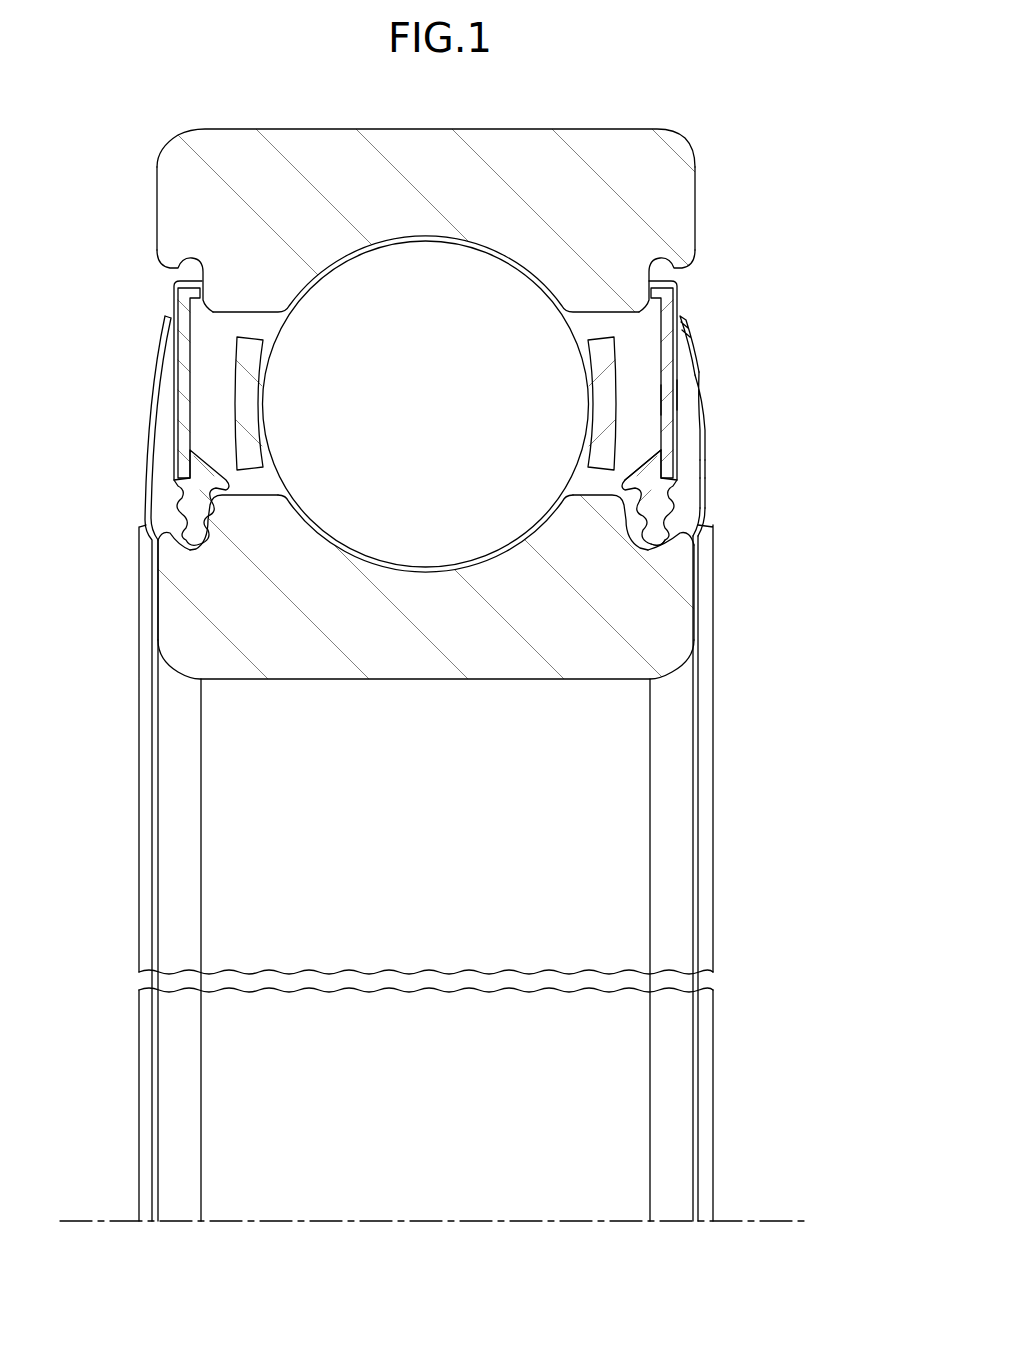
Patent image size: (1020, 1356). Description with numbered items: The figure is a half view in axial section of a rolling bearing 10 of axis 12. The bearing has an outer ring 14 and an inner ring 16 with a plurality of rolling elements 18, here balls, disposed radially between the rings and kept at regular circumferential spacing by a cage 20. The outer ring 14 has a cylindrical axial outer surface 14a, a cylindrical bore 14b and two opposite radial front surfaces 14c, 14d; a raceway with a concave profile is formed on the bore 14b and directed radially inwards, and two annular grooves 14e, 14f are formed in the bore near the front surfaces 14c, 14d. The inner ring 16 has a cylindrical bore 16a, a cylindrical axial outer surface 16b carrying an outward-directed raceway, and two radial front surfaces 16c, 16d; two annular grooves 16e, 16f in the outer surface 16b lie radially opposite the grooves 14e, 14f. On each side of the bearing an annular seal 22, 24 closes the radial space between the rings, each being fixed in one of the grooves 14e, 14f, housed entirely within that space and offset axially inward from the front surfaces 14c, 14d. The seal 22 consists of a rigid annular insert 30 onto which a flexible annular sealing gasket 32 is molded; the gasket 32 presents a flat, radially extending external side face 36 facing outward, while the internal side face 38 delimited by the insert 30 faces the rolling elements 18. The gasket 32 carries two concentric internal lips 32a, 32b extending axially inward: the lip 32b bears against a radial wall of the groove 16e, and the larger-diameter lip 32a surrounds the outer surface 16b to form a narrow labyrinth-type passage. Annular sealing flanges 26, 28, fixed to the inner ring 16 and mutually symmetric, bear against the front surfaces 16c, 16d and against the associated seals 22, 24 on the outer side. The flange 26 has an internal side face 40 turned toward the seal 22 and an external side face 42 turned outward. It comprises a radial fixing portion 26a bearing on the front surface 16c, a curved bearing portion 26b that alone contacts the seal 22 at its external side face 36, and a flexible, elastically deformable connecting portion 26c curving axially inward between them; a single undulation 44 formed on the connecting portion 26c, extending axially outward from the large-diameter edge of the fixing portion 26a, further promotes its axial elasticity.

The rolling bearing 10 is at (667, 104).
The axis 12 is at (90, 1221).
The outer ring 14 is at (427, 127).
The cylindrical axial outer surface 14a is at (335, 128).
The cylindrical bore 14b is at (583, 337).
The radial front surface 14c is at (697, 212).
The radial front surface 14d is at (157, 212).
The annular groove 14e is at (672, 277).
The annular groove 14f is at (178, 277).
The inner ring 16 is at (427, 682).
The cylindrical bore 16a is at (336, 681).
The cylindrical axial outer surface 16b is at (575, 495).
The radial front surface 16c is at (696, 595).
The radial front surface 16d is at (157, 596).
The annular groove 16e is at (698, 537).
The annular groove 16f is at (147, 538).
The rolling elements 18 is at (439, 414).
The cage 20 is at (618, 414).
The annular seal 22 is at (680, 300).
The annular seal 24 is at (172, 300).
The annular sealing flange 26 is at (705, 412).
The annular fixing portion 26a is at (700, 581).
The bearing portion 26b is at (687, 328).
The annular connecting portion 26c is at (707, 441).
The annular sealing flange 28 is at (148, 395).
The rigid annular insert 30 is at (666, 362).
The flexible annular sealing gasket 32 is at (680, 372).
The first annular internal lip 32a is at (640, 478).
The second annular internal lip 32b is at (648, 525).
The external side face 36 is at (667, 395).
The internal side face 38 is at (654, 400).
The internal side face 40 is at (696, 498).
The external side face 42 is at (708, 465).
The undulation 44 is at (708, 524).